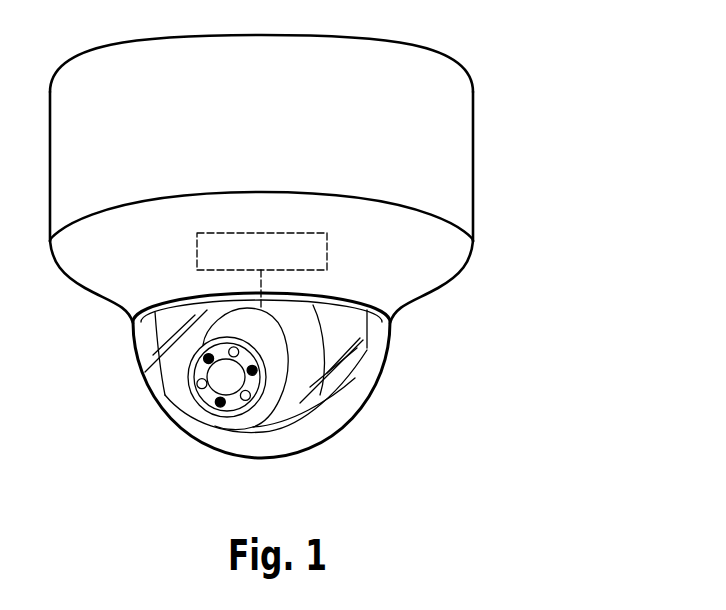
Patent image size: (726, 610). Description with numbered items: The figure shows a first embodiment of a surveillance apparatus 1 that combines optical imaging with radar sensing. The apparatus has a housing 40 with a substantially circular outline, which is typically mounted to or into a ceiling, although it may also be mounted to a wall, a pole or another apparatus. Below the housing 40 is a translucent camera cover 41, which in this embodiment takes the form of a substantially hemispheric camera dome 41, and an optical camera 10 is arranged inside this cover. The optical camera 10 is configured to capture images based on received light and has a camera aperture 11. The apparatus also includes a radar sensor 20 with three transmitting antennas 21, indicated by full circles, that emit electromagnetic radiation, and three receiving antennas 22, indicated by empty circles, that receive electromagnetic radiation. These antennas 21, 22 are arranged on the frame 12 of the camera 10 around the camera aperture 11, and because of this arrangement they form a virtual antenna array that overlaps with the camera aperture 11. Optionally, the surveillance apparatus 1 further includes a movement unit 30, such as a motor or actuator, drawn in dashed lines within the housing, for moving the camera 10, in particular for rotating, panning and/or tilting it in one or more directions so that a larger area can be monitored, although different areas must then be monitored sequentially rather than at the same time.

The surveillance apparatus 1 is at (562, 70).
The optical camera 10 is at (281, 356).
The camera aperture 11 is at (212, 371).
The frame 12 is at (208, 393).
The radar sensor 20 is at (173, 340).
The transmitting antennas 21 is at (218, 406).
The receiving antennas 22 is at (250, 401).
The movement unit 30 is at (197, 250).
The housing 40 is at (453, 275).
The camera cover 41 is at (358, 414).